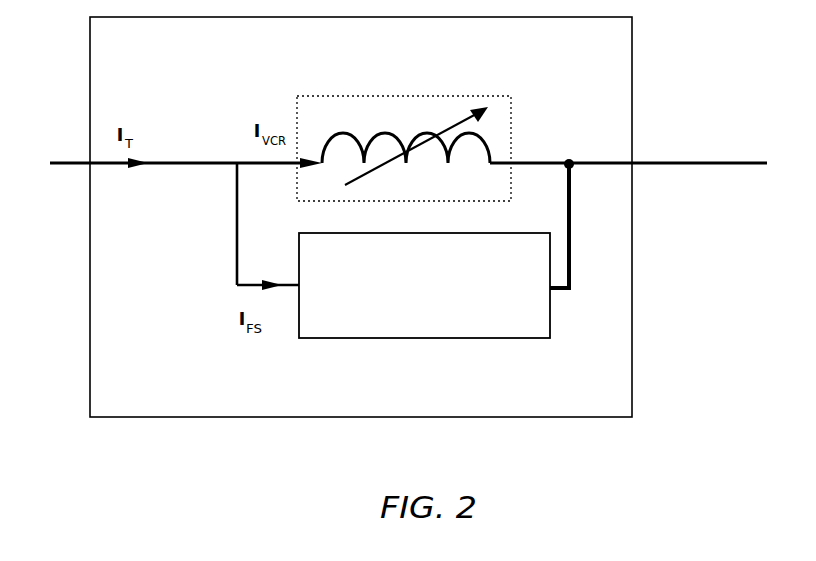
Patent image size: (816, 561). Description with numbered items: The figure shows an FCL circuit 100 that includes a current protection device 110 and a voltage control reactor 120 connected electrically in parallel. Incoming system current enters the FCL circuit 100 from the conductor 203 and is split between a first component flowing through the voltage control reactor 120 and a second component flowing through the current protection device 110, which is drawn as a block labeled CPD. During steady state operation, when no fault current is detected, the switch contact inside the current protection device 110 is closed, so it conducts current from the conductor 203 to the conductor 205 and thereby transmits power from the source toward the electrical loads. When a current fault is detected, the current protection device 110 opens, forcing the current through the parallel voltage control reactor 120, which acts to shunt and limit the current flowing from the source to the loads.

The FCL circuit 100 is at (152, 86).
The current protection device 110 is at (544, 340).
The voltage control reactor 120 is at (510, 96).
The conductor 203 is at (60, 146).
The conductor 205 is at (689, 156).